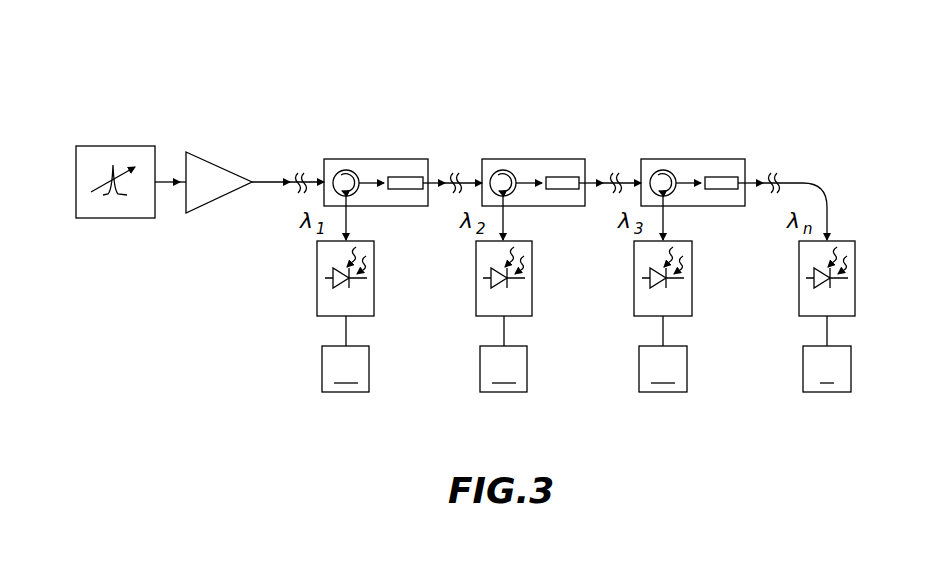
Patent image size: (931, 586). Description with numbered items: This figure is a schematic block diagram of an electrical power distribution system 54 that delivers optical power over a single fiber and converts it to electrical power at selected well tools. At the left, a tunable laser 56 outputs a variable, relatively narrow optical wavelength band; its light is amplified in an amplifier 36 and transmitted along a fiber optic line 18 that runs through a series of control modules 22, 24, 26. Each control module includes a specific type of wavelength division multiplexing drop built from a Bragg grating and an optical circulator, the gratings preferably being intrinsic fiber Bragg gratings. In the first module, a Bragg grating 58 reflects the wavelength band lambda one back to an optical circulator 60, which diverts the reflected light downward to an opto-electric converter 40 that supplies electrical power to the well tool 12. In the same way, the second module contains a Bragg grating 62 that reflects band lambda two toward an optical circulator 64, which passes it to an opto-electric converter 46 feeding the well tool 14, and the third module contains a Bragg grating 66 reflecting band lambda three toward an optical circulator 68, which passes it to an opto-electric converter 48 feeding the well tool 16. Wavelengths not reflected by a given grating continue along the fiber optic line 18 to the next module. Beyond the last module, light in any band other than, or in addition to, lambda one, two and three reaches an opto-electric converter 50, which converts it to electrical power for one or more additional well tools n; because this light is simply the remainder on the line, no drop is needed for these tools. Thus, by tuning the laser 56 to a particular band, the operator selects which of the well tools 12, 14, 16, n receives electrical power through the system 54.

The electrical power distribution system 54 is at (632, 64).
The tunable laser 56 is at (108, 146).
The optical amplifier 36 is at (225, 167).
The fiber optic line 18 is at (265, 180).
The control module 22 is at (387, 171).
The control module 24 is at (541, 171).
The control module 26 is at (708, 171).
The optical circulator 60 is at (346, 169).
The optical circulator 64 is at (503, 169).
The optical circulator 68 is at (663, 169).
The Bragg grating 58 is at (405, 176).
The Bragg grating 62 is at (565, 176).
The Bragg grating 66 is at (722, 176).
The opto-electric converter 40 is at (317, 300).
The opto-electric converter 46 is at (476, 297).
The opto-electric converter 48 is at (634, 290).
The opto-electric converter 50 is at (799, 290).
The well tool 12 is at (345, 369).
The well tool 14 is at (503, 369).
The well tool 16 is at (663, 369).
The well tool n is at (827, 369).